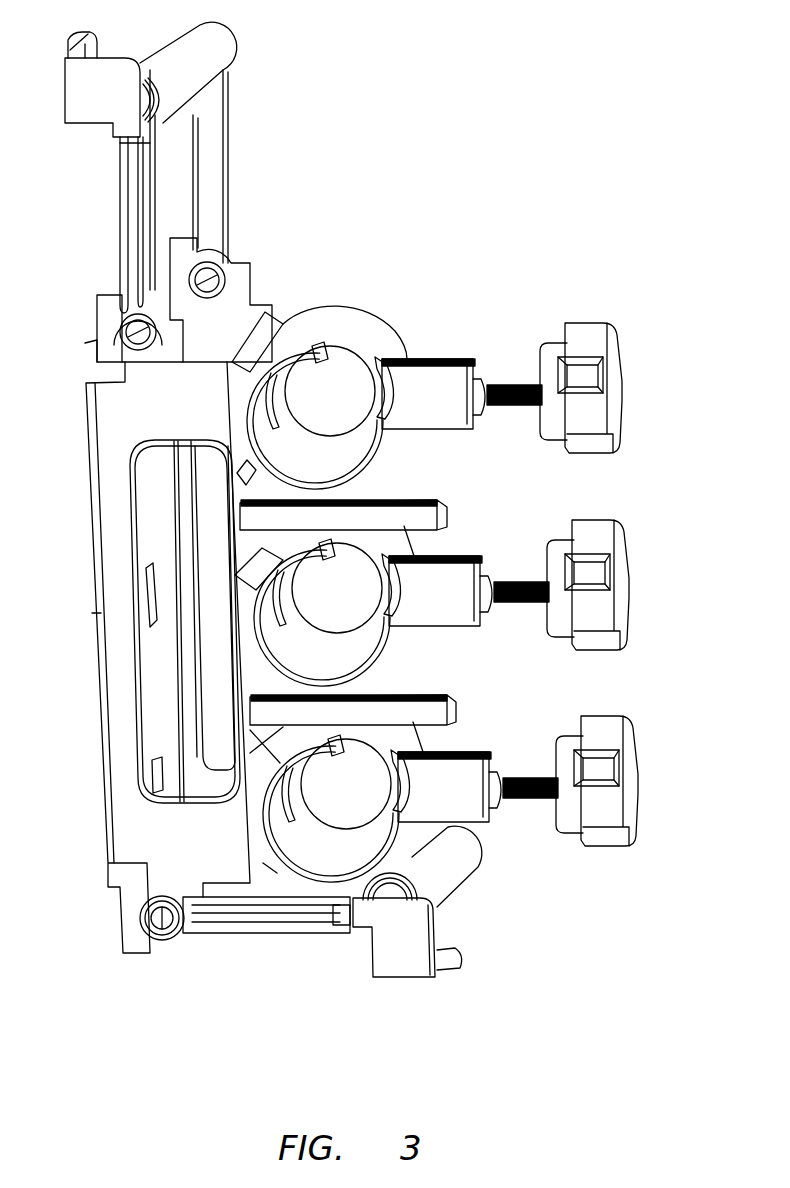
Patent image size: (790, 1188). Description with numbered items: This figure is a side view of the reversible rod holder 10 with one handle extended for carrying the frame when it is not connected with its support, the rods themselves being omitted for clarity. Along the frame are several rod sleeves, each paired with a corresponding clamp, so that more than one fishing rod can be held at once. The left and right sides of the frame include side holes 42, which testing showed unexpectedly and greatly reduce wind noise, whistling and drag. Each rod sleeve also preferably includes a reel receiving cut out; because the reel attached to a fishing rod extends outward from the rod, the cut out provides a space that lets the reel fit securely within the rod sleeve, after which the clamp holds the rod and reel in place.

The reversible rod holder 10 is at (466, 130).
The side hole 42 is at (158, 714).